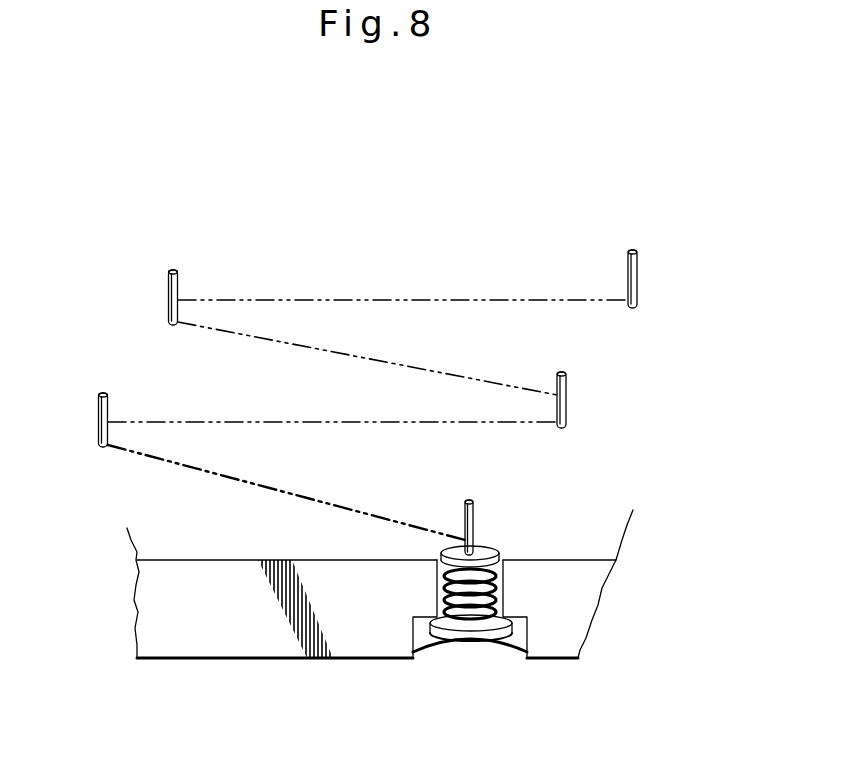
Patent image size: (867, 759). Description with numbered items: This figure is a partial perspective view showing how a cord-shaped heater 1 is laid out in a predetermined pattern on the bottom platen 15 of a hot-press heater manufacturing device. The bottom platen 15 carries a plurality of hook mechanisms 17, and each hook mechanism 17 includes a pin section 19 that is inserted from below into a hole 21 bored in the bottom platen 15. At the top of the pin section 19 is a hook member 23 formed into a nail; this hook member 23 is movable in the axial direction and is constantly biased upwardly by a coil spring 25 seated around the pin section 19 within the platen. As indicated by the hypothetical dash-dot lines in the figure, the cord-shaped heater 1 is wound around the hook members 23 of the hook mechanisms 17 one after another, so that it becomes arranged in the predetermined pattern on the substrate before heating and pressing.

The cord-shaped heater 1 is at (238, 481).
The bottom platen 15 is at (205, 645).
The hook mechanism 17 is at (188, 278).
The pin section 19 is at (465, 632).
The hole 21 is at (497, 643).
The hook member 23 is at (170, 272).
The coil spring 25 is at (490, 580).